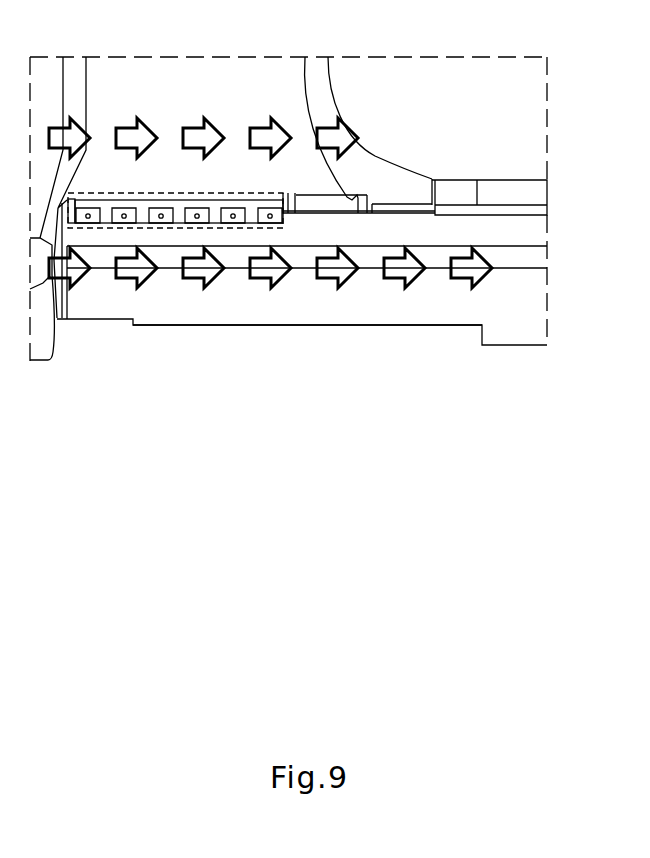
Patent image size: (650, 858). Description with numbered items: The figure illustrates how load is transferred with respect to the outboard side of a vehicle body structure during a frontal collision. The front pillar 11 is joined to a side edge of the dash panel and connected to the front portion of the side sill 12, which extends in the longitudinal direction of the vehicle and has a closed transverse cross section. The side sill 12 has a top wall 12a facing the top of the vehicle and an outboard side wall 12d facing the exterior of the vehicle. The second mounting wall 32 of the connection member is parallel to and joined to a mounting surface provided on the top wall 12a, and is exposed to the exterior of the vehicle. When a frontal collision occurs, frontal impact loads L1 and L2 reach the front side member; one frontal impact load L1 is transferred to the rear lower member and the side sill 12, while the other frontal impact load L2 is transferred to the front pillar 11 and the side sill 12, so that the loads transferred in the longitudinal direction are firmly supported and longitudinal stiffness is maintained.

The front pillar 11 is at (182, 68).
The side sill 12 is at (435, 341).
The top wall 12a is at (517, 232).
The outboard side wall 12d is at (355, 326).
The second mounting wall 32 is at (179, 216).
The frontal impact load L1 is at (262, 282).
The frontal impact load L2 is at (260, 120).